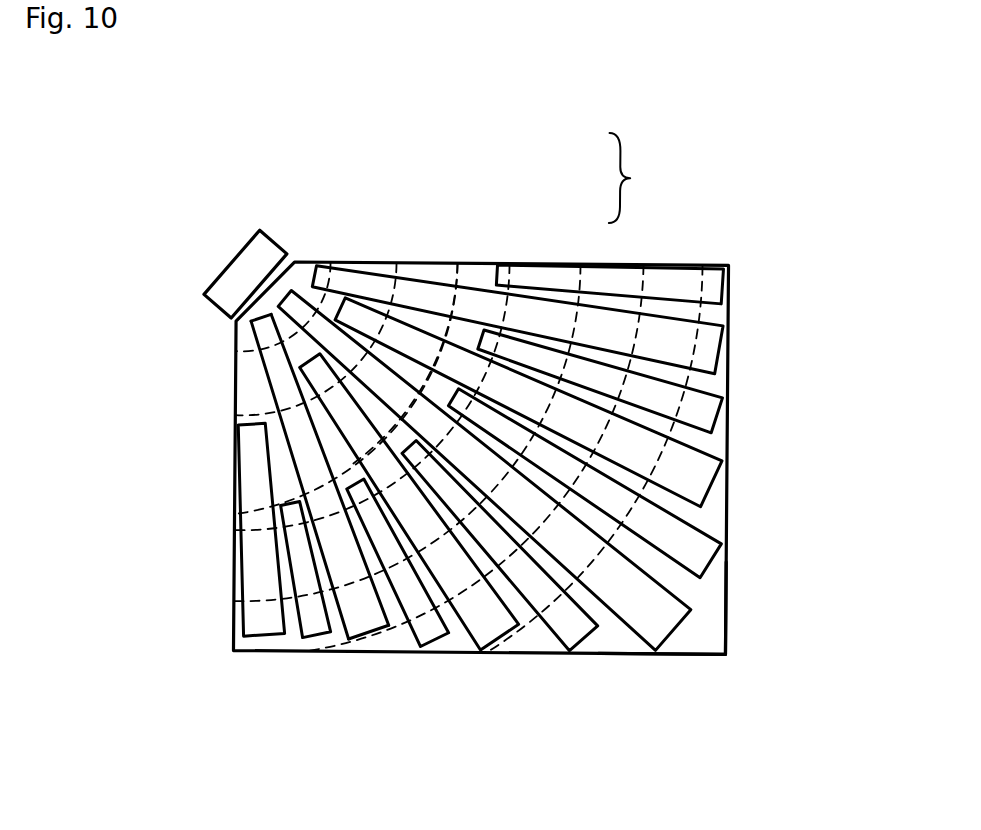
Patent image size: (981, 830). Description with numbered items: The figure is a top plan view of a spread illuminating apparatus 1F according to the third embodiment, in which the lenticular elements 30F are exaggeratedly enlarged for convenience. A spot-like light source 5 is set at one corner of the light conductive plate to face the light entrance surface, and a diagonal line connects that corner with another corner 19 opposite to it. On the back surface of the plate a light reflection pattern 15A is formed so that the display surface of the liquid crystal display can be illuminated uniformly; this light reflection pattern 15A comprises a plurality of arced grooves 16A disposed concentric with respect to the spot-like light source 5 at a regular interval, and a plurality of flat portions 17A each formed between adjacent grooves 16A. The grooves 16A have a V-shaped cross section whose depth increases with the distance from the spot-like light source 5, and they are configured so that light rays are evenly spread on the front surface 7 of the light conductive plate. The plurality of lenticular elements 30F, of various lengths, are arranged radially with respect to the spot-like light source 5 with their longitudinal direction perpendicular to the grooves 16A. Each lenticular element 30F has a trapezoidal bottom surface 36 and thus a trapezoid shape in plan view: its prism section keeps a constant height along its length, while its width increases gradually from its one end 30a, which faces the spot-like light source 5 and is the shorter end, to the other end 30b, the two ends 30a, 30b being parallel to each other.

The spread illuminating apparatus 1F is at (727, 199).
The spot-like light source 5 is at (262, 254).
The front surface 7 is at (238, 408).
The light reflection pattern 15A is at (478, 298).
The arced grooves 16A is at (473, 263).
The flat portions 17A is at (430, 263).
The another corner 19 is at (727, 656).
The one end 30a is at (244, 338).
The other end 30b is at (373, 634).
The lenticular elements 30F is at (412, 510).
The bottom surface 36 is at (235, 515).